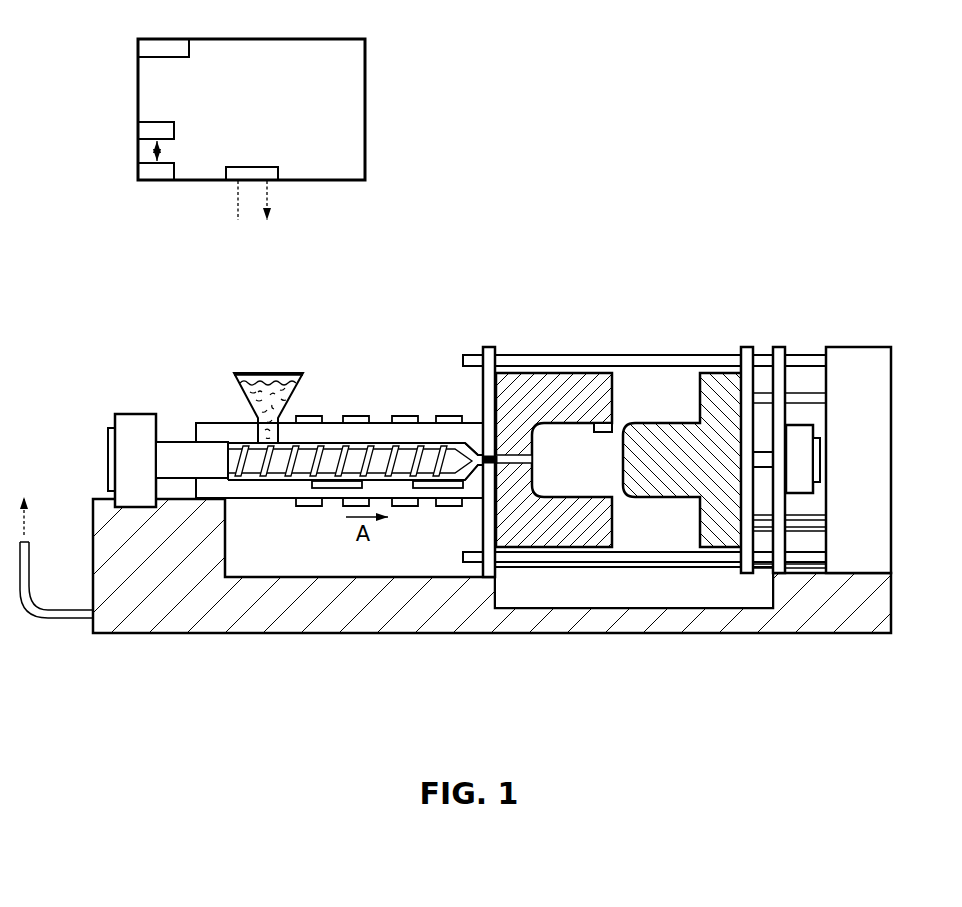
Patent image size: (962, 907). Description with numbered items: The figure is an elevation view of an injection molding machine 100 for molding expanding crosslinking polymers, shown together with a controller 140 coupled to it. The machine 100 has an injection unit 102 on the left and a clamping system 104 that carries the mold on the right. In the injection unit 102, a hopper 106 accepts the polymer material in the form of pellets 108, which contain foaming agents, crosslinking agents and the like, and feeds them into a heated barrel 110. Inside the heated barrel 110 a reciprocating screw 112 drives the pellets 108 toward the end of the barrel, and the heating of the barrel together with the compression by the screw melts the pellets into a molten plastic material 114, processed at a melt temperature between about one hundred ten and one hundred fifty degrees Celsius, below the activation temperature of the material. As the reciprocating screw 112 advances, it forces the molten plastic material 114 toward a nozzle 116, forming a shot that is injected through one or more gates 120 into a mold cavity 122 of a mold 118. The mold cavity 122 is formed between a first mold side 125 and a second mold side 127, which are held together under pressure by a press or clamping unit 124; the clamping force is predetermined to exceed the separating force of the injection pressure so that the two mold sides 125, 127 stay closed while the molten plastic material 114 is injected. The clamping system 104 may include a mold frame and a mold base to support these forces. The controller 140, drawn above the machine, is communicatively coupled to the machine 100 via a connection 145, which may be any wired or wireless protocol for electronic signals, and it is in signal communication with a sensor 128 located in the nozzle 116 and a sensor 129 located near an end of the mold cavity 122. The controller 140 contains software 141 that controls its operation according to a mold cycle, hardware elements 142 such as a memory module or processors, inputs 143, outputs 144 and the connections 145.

The injection molding machine 100 is at (537, 125).
The injection unit 102 is at (318, 535).
The clamping system 104 is at (634, 643).
The hopper 106 is at (279, 371).
The pellets 108 is at (262, 400).
The heated barrel 110 is at (333, 415).
The reciprocating screw 112 is at (277, 479).
The molten plastic material 114 is at (384, 446).
The nozzle 116 is at (498, 450).
The mold 118 is at (616, 363).
The gates 120 is at (522, 455).
The mold cavity 122 is at (573, 435).
The clamping unit 124 is at (831, 336).
The first mold side 125 is at (553, 545).
The second mold side 127 is at (683, 480).
The sensor 128 is at (482, 454).
The sensor 129 is at (601, 424).
The controller 140 is at (317, 39).
The software 141 is at (137, 130).
The hardware elements 142 is at (137, 170).
The inputs 143 is at (137, 47).
The outputs 144 is at (272, 172).
The connection 145 is at (235, 195).